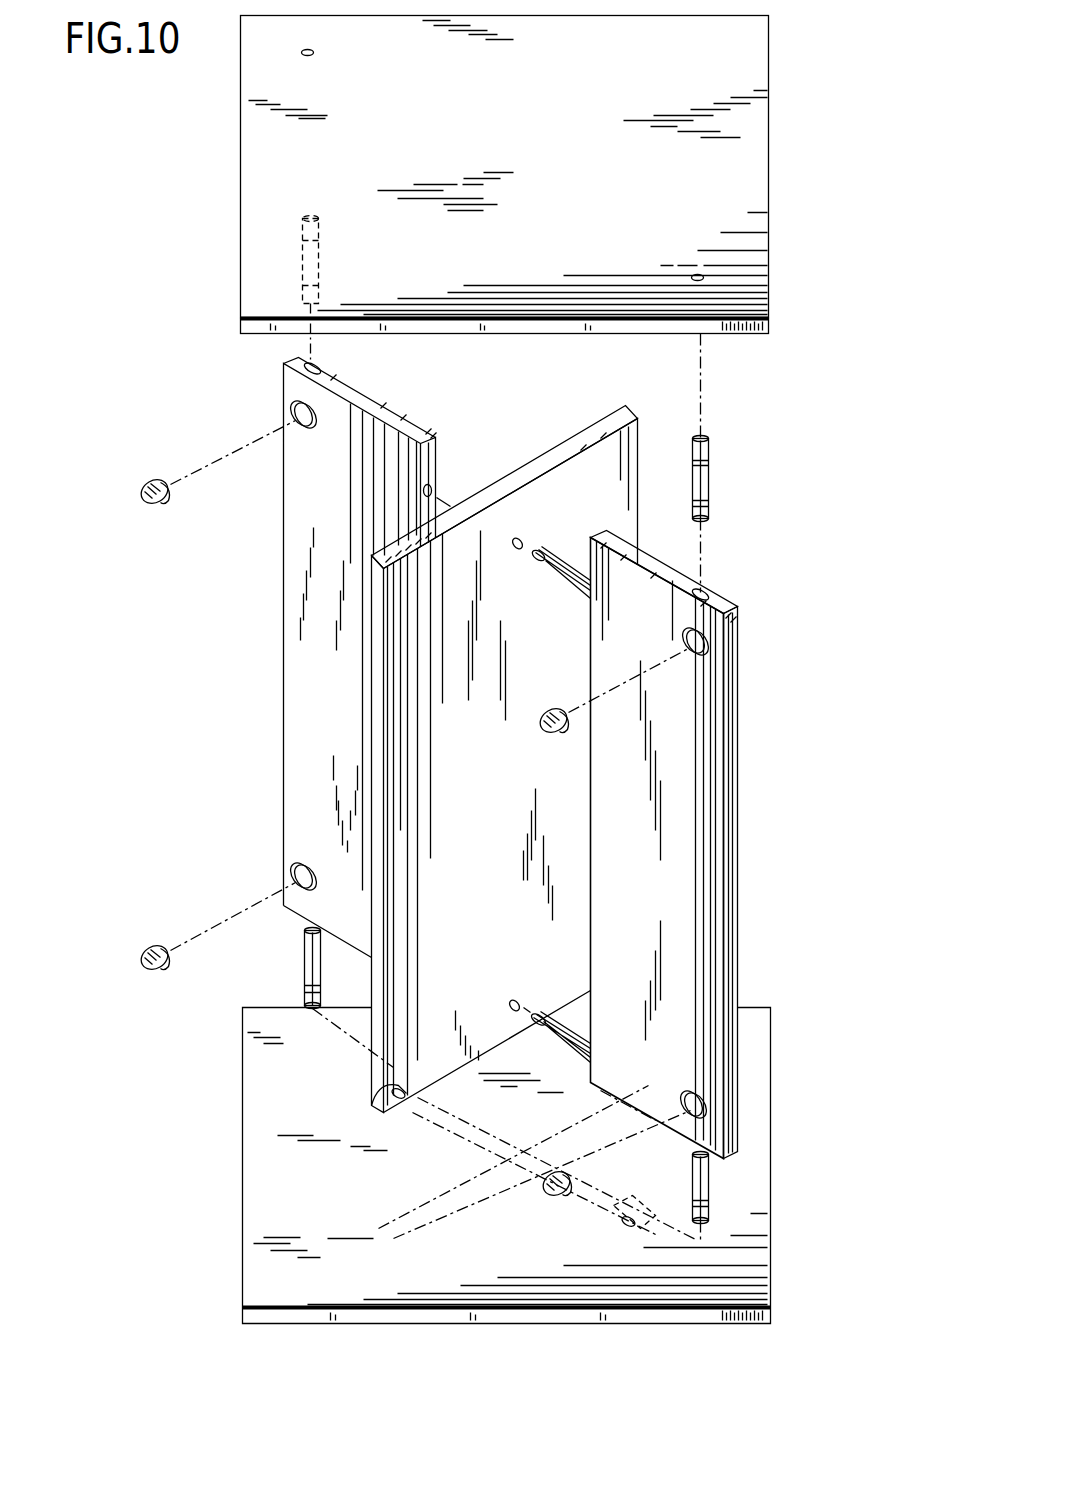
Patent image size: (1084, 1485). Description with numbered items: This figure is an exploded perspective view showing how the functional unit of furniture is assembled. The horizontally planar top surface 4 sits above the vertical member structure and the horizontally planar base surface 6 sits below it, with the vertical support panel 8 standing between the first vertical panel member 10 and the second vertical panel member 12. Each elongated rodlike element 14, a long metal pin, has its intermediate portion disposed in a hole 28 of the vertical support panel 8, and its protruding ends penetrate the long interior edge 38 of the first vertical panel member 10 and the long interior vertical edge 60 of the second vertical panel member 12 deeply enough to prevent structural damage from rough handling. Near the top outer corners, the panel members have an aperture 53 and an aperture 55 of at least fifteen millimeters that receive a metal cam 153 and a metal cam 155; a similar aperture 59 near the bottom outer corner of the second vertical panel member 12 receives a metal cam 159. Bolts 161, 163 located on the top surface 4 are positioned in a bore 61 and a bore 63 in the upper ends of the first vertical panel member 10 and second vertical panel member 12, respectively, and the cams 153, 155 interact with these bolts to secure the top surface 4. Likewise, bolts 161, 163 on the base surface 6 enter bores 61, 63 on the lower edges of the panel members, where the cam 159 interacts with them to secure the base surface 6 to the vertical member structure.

The horizontally planar top surface 4 is at (747, 195).
The horizontally planar base surface 6 is at (765, 1184).
The vertical support panel 8 is at (550, 455).
The first vertical panel member 10 is at (394, 421).
The second vertical panel member 12 is at (734, 782).
The elongated rodlike element 14 is at (566, 525).
The hole 28 is at (519, 550).
The long interior edge 38 is at (432, 488).
The aperture 53 is at (312, 433).
The aperture 55 is at (682, 643).
The aperture 59 is at (690, 1090).
The long interior vertical edge 60 is at (606, 790).
The bore 61 is at (320, 368).
The bore 63 is at (708, 592).
The metal cam 153 is at (168, 506).
The metal cam 155 is at (540, 716).
The metal cam 159 is at (540, 1188).
The bolt 161 is at (318, 268).
The bolt 163 is at (712, 482).